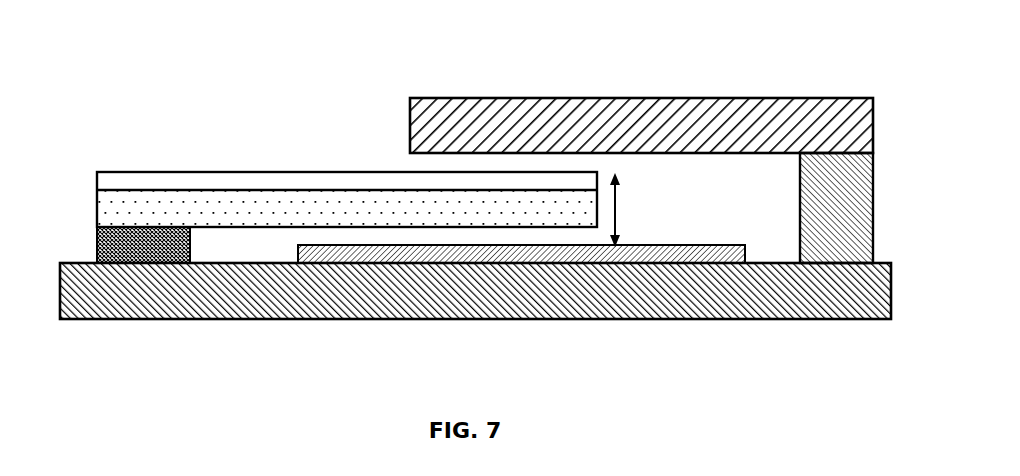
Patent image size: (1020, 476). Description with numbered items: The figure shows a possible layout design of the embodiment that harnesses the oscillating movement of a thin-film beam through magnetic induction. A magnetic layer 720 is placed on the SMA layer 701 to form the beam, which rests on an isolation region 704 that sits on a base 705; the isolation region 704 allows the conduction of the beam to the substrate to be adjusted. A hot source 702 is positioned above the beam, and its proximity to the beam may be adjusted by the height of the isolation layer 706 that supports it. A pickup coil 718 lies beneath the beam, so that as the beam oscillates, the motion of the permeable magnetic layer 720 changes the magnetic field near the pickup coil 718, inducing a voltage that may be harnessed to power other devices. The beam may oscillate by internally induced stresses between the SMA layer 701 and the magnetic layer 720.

The SMA layer 701 is at (499, 237).
The hot source 702 is at (515, 95).
The isolation region 704 is at (93, 235).
The substrate 705 is at (609, 326).
The isolation layer 706 is at (792, 176).
The pickup coil 718 is at (404, 270).
The magnetic layer 720 is at (292, 166).